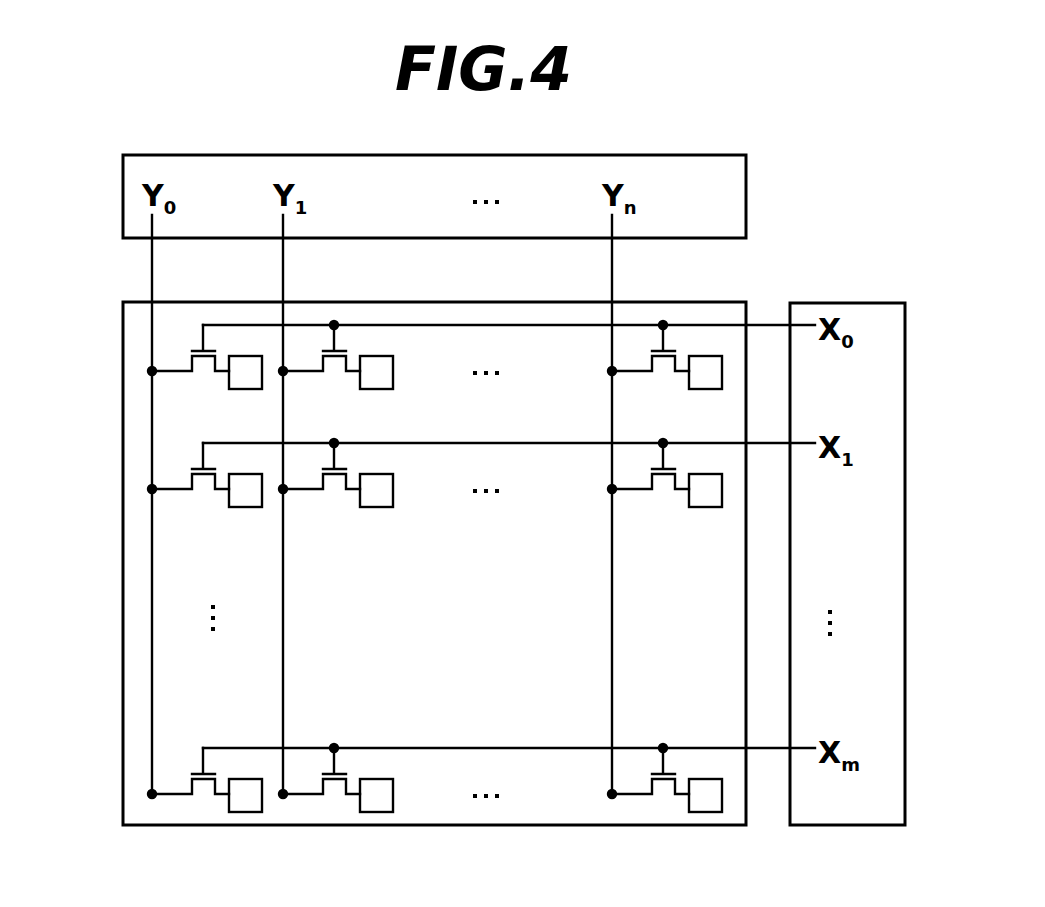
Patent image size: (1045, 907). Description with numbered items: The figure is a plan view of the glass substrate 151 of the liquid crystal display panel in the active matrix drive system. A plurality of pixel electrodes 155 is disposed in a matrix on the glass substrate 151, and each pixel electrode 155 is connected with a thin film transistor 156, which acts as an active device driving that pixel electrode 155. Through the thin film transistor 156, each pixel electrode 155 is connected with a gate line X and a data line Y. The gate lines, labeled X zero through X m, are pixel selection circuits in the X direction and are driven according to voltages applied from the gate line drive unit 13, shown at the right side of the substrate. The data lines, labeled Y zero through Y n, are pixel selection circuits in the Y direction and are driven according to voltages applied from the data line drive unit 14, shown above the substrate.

The data line drive unit 14 is at (747, 195).
The gate line drive unit 13 is at (852, 300).
The glass substrate 151 is at (138, 819).
The pixel electrode 155 is at (238, 378).
The thin film transistor 156 is at (197, 347).